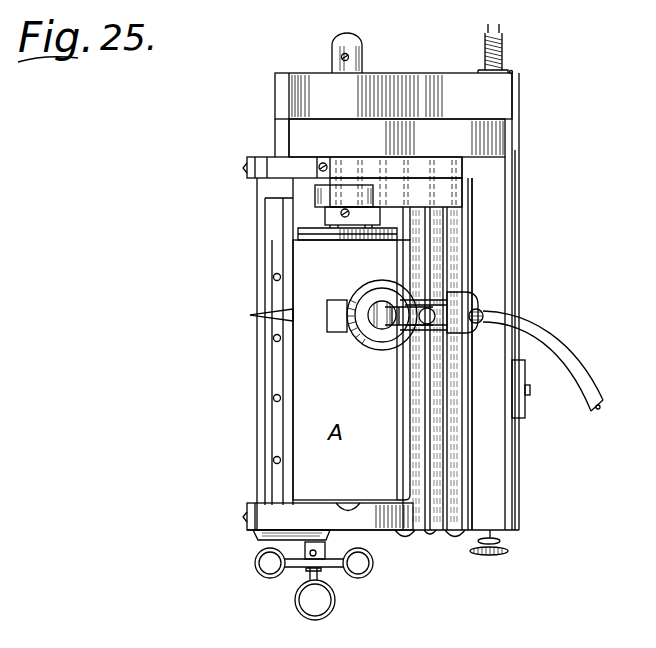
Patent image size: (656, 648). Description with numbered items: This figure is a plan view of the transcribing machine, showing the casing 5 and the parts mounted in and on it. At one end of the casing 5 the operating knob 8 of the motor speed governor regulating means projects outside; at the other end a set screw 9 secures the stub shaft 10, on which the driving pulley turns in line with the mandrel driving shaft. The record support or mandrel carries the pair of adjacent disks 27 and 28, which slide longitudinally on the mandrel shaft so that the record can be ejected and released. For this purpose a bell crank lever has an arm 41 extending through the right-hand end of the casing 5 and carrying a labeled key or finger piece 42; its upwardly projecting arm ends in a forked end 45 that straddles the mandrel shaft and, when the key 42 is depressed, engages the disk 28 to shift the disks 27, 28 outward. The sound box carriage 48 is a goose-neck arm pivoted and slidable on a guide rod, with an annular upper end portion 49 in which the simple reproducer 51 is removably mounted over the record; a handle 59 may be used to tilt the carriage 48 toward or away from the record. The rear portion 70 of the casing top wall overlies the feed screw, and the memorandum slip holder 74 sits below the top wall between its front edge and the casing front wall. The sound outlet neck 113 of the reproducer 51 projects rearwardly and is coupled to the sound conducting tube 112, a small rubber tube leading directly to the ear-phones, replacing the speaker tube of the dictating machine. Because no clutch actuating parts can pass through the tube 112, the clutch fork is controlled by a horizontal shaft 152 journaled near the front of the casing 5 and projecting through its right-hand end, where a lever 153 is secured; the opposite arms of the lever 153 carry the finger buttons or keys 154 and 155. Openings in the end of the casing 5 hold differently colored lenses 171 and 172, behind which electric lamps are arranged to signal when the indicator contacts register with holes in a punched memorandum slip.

The casing 5 is at (372, 531).
The operating knob 8 is at (496, 555).
The set screw 9 is at (342, 56).
The stub shaft 10 is at (352, 41).
The disk 27 is at (306, 237).
The disk 28 is at (300, 229).
The arm 41 is at (309, 578).
The key or finger piece 42 is at (300, 612).
The forked end 45 is at (319, 224).
The sound box carriage 48 is at (452, 335).
The annular upper end portion 49 is at (356, 345).
The reproducer 51 is at (381, 300).
The handle 59 is at (472, 296).
The rear portion of top wall 70 is at (423, 418).
The memorandum slip holder 74 is at (283, 535).
The sound conducting tube 112 is at (551, 342).
The sound outlet neck 113 is at (400, 320).
The horizontal shaft 152 is at (322, 553).
The lever 153 is at (339, 568).
The finger button or key 154 is at (375, 572).
The finger button or key 155 is at (256, 562).
The colored lens 171 is at (409, 540).
The colored lens 172 is at (450, 540).